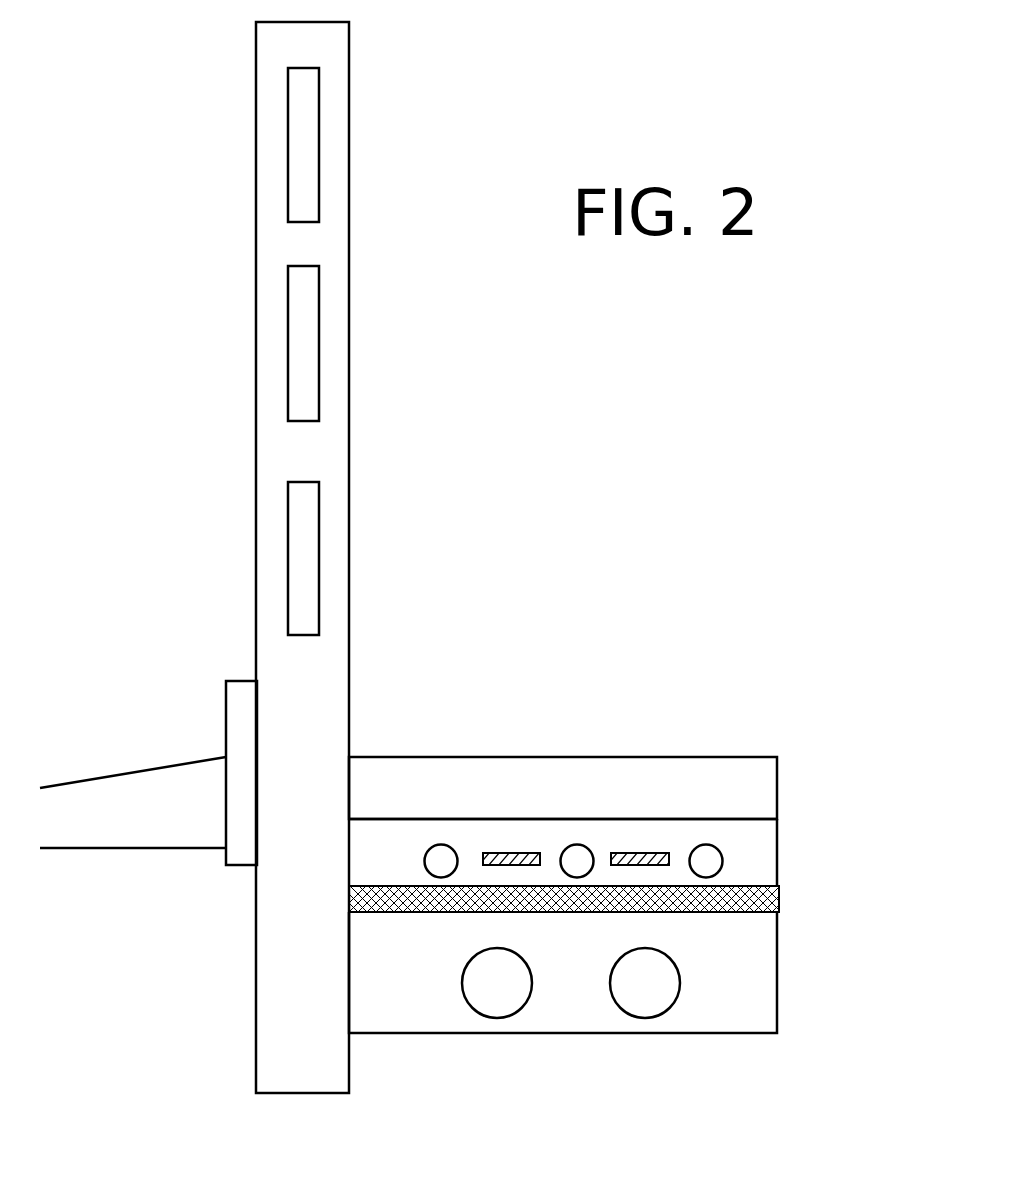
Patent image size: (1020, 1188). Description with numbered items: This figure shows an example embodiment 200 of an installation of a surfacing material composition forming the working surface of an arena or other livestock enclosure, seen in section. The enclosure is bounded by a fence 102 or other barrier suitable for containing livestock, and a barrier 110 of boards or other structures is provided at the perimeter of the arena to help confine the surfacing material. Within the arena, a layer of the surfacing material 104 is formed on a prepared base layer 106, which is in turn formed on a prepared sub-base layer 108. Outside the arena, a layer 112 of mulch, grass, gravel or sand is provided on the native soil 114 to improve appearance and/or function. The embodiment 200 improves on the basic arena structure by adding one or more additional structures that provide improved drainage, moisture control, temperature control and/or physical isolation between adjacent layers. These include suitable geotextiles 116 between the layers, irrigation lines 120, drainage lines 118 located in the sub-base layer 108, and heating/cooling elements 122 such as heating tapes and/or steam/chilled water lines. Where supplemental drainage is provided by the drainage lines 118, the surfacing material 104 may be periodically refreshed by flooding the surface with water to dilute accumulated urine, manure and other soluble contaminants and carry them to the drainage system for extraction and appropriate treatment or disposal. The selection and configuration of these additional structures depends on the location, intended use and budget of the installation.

The example embodiment 200 is at (607, 106).
The fence 102 is at (370, 557).
The surfacing material 104 is at (563, 770).
The base layer 106 is at (564, 764).
The sub-base layer 108 is at (531, 1035).
The barrier 110 is at (163, 649).
The layer 112 is at (133, 716).
The native soil 114 is at (133, 942).
The geotextiles 116 is at (611, 801).
The drainage lines 118 is at (572, 1049).
The irrigation lines 120 is at (776, 762).
The heating/cooling elements 122 is at (694, 734).